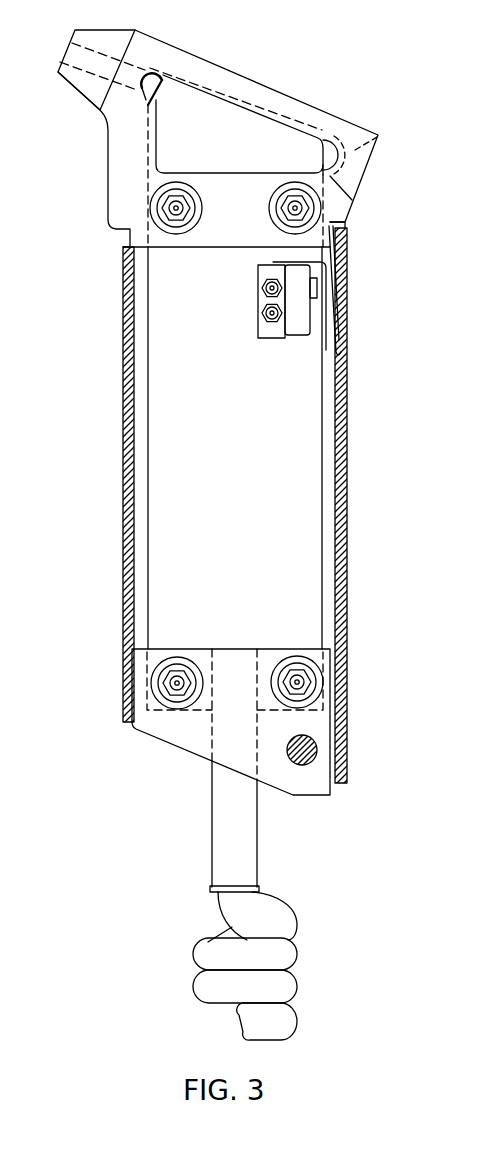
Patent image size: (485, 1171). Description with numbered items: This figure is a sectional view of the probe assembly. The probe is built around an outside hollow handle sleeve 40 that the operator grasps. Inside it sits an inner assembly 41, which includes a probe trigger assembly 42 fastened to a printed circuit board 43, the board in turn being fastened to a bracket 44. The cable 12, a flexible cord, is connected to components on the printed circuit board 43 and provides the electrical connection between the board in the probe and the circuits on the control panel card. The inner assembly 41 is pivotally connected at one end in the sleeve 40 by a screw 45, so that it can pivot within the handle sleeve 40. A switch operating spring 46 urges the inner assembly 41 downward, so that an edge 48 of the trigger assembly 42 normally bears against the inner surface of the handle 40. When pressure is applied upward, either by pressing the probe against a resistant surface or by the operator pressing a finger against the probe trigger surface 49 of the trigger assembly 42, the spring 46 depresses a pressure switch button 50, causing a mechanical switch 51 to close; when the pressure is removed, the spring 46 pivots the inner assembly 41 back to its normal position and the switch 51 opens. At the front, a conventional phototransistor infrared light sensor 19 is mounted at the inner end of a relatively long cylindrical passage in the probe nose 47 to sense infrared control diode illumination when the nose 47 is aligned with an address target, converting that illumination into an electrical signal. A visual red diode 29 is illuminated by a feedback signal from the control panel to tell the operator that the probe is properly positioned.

The cable 12 is at (283, 912).
The phototransistor infrared light sensor 19 is at (164, 84).
The visual red diode 29 is at (323, 157).
The handle sleeve 40 is at (347, 412).
The inner assembly 41 is at (148, 408).
The probe trigger assembly 42 is at (288, 94).
The printed circuit board 43 is at (247, 493).
The bracket 44 is at (305, 795).
The screw 45 is at (287, 747).
The switch operating spring 46 is at (345, 357).
The probe nose 47 is at (111, 29).
The edge 48 is at (123, 243).
The probe trigger surface 49 is at (107, 200).
The pressure switch button 50 is at (306, 338).
The mechanical switch 51 is at (291, 335).